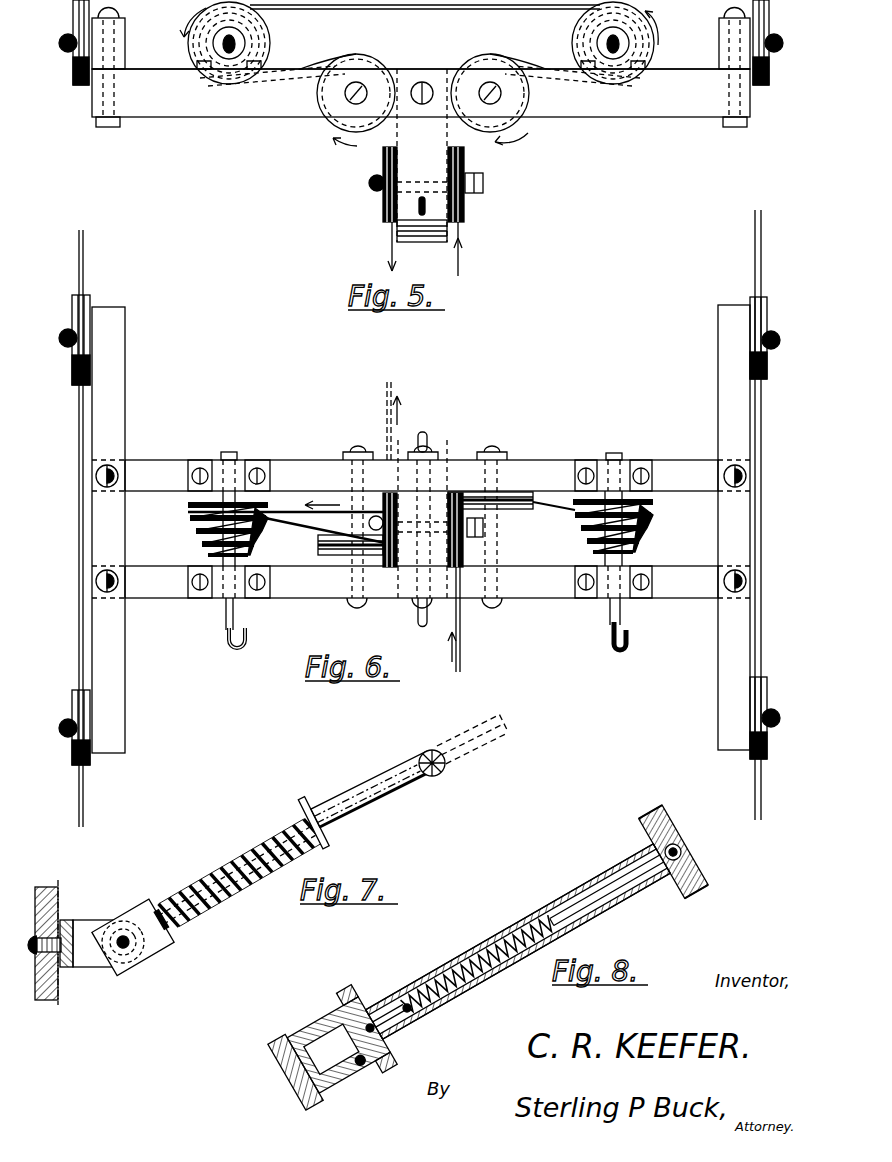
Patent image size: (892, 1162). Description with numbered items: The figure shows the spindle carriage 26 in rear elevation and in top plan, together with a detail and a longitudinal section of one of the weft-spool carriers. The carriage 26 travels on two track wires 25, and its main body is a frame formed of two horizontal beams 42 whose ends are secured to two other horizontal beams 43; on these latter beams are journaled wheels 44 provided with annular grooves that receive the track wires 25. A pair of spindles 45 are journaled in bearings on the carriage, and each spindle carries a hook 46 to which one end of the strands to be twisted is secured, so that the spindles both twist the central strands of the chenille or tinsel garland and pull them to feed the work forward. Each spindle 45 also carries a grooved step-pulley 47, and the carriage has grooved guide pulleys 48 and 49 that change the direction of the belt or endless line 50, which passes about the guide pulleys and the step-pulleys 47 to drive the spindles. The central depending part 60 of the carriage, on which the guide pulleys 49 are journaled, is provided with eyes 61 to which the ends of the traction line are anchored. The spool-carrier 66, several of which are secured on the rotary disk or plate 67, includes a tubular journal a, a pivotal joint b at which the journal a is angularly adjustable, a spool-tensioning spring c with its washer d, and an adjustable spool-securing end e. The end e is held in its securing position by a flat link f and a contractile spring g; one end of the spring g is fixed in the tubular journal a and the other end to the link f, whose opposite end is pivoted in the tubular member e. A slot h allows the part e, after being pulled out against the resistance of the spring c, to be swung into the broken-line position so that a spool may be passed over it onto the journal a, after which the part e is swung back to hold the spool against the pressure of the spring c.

In FIG. 6, the track wires 25 is at (84, 271).
In FIG. 5, the spindle carriage 26 is at (235, 129).
In FIG. 6, the spindle carriage 26 is at (312, 452).
In FIG. 5, the horizontal beams 42 is at (306, 108).
In FIG. 6, the horizontal beams 42 is at (703, 576).
In FIG. 5, the horizontal beams 43 is at (125, 50).
In FIG. 6, the horizontal beams 43 is at (125, 417).
In FIG. 5, the wheels 44 is at (73, 17).
In FIG. 6, the wheels 44 is at (90, 300).
In FIG. 6, the spindles 45 is at (236, 614).
In FIG. 5, the hook 46 is at (237, 38).
In FIG. 6, the hook 46 is at (243, 642).
In FIG. 5, the step-pulley 47 is at (264, 40).
In FIG. 6, the step-pulley 47 is at (200, 520).
In FIG. 5, the guide pulleys 48 is at (528, 65).
In FIG. 6, the guide pulleys 48 is at (318, 544).
In FIG. 5, the guide pulleys 49 is at (448, 158).
In FIG. 6, the guide pulleys 49 is at (386, 560).
In FIG. 5, the belt or endless line 50 is at (448, 7).
In FIG. 6, the belt or endless line 50 is at (553, 508).
In FIG. 5, the central depending part 60 is at (422, 155).
In FIG. 6, the central depending part 60 is at (410, 556).
In FIG. 5, the eyes 61 is at (413, 202).
In FIG. 6, the eyes 61 is at (428, 440).
In FIG. 7, the spool-carrier 66 is at (376, 779).
In FIG. 7, the disk or rotary plate 67 is at (58, 896).
In FIG. 7, the tubular journal a is at (382, 808).
In FIG. 8, the tubular journal a is at (490, 947).
In FIG. 7, the pivotal joint b is at (131, 948).
In FIG. 8, the pivotal joint b is at (357, 1068).
In FIG. 7, the spool-tensioning spring c is at (236, 868).
In FIG. 7, the washer d is at (337, 846).
In FIG. 7, the adjustable spool-securing end e is at (446, 770).
In FIG. 8, the adjustable spool-securing end e is at (679, 840).
In FIG. 8, the flat link f is at (593, 900).
In FIG. 8, the contractile spring g is at (483, 970).
In FIG. 8, the slot h is at (677, 885).